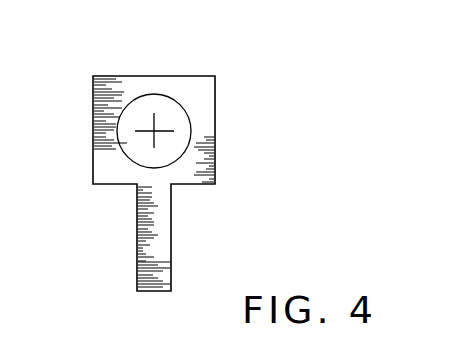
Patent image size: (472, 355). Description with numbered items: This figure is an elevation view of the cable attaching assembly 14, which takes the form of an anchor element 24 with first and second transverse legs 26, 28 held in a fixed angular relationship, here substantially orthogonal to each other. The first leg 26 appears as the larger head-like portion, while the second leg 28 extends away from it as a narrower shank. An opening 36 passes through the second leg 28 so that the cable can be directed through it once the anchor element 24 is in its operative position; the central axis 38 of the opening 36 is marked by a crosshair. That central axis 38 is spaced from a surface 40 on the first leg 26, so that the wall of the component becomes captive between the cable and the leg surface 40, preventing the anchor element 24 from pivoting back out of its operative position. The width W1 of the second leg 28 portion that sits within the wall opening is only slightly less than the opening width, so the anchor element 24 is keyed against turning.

The cable attaching assembly 14 is at (250, 59).
The anchor element 24 is at (205, 154).
The first leg 26 is at (160, 278).
The second leg 28 is at (137, 203).
The opening 36 is at (132, 157).
The central axis 38 is at (153, 130).
The surface 40 is at (155, 258).
The width W1 is at (185, 224).